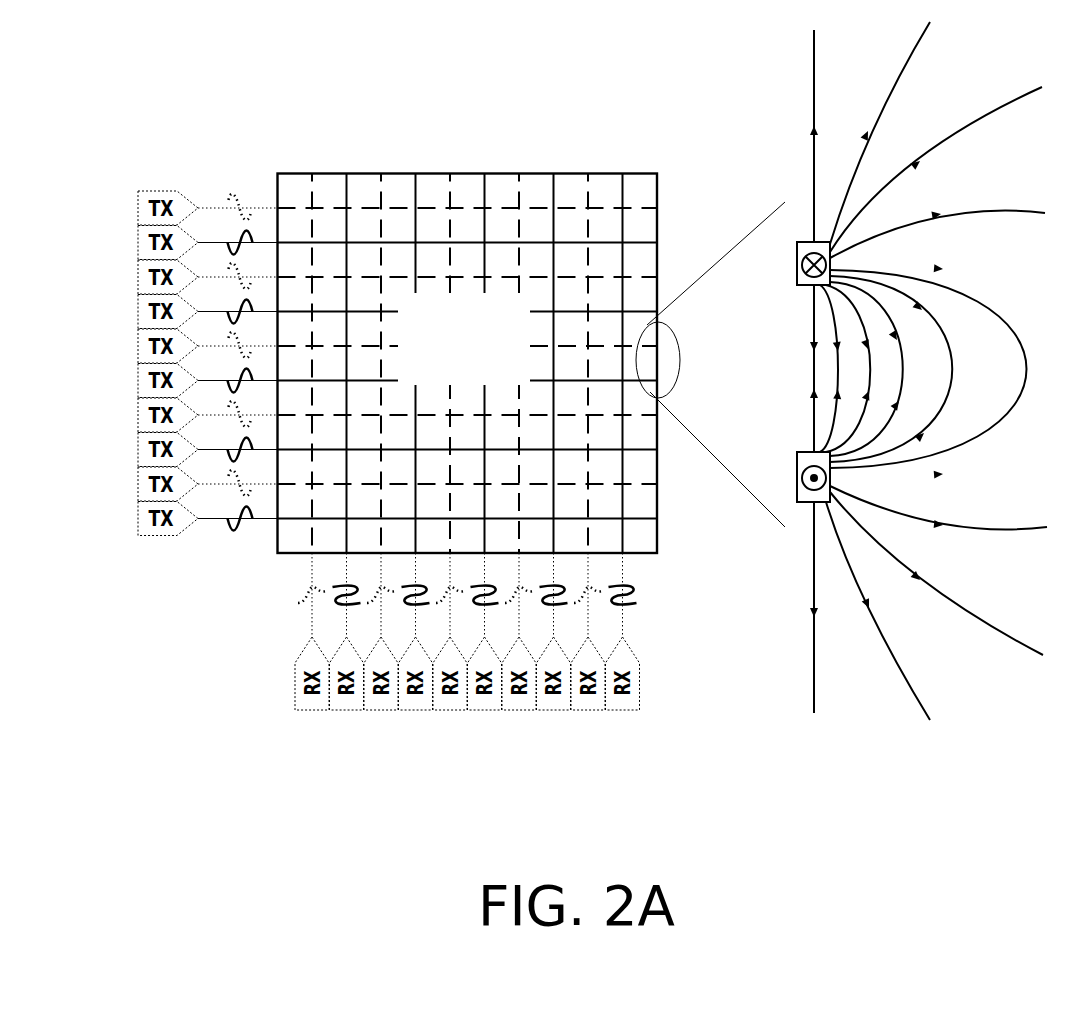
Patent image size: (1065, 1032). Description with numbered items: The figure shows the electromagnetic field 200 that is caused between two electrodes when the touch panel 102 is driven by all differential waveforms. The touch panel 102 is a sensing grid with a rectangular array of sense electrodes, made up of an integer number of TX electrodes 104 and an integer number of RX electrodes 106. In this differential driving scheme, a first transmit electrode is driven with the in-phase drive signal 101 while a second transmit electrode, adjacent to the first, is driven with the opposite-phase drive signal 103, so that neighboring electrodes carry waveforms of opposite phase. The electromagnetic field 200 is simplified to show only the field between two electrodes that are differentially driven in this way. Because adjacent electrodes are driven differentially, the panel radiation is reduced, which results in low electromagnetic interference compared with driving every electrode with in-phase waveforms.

The in-phase drive signal 101 is at (238, 399).
The touch panel 102 is at (263, 176).
The opposite-phase drive signal 103 is at (240, 353).
The TX electrodes 104 is at (110, 293).
The RX electrodes 106 is at (450, 731).
The electromagnetic field 200 is at (771, 93).